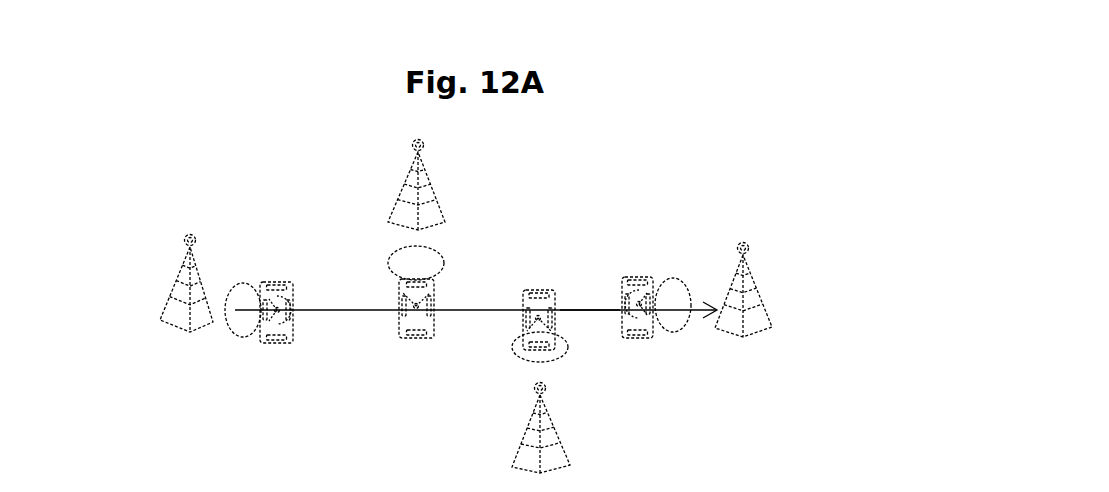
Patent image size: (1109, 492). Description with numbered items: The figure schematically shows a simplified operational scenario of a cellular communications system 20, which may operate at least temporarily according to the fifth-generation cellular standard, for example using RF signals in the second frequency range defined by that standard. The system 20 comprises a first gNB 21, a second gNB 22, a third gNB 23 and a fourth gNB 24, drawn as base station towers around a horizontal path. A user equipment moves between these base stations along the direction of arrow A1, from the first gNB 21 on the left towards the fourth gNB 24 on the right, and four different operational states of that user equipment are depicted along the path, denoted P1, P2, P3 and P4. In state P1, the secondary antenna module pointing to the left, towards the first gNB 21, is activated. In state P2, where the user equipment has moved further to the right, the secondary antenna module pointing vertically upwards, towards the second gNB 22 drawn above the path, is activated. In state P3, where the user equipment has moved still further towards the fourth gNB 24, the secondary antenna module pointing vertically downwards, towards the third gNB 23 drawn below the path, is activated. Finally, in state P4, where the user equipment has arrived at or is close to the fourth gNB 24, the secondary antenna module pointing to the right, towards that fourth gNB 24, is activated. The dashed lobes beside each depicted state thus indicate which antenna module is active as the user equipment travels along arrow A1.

The cellular communications system 20 is at (612, 155).
The first gNB 21 is at (167, 305).
The second gNB 22 is at (393, 205).
The third gNB 23 is at (513, 458).
The fourth gNB 24 is at (765, 302).
The first operational state P1 is at (259, 298).
The second operational state P2 is at (405, 292).
The third operational state P3 is at (530, 321).
The fourth operational state P4 is at (656, 296).
The arrow A1 is at (590, 307).